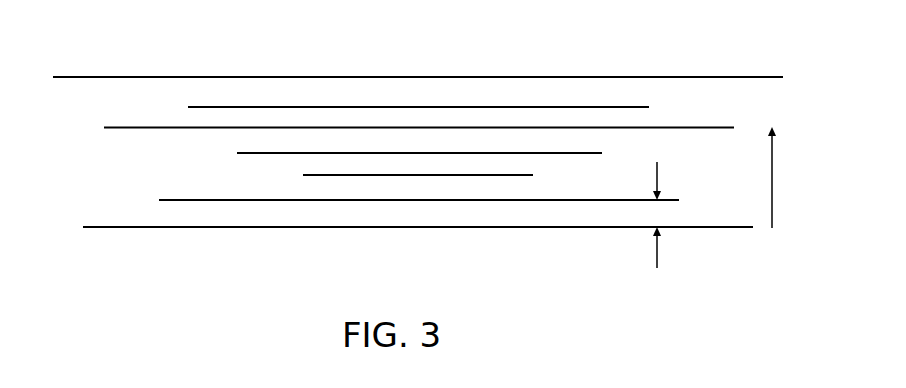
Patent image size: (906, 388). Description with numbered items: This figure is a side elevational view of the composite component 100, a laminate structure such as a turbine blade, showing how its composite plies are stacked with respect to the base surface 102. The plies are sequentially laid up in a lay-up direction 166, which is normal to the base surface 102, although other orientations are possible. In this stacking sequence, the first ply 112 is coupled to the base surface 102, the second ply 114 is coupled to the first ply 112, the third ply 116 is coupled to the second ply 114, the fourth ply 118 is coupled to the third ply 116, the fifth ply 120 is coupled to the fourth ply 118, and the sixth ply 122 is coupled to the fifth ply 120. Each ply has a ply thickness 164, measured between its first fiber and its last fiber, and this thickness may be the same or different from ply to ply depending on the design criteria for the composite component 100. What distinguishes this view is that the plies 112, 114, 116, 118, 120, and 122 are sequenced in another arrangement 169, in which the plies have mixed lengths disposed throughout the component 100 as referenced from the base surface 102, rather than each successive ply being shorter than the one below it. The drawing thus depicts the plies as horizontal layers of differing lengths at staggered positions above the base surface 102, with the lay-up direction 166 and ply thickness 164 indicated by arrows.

The composite component 100 is at (730, 96).
The base surface 102 is at (262, 231).
The first ply 112 is at (170, 200).
The second ply 114 is at (314, 173).
The third ply 116 is at (247, 153).
The fourth ply 118 is at (115, 126).
The fifth ply 120 is at (203, 107).
The sixth ply 122 is at (87, 76).
The ply thickness 164 is at (660, 255).
The lay-up direction 166 is at (773, 183).
The arrangement 169 is at (616, 29).